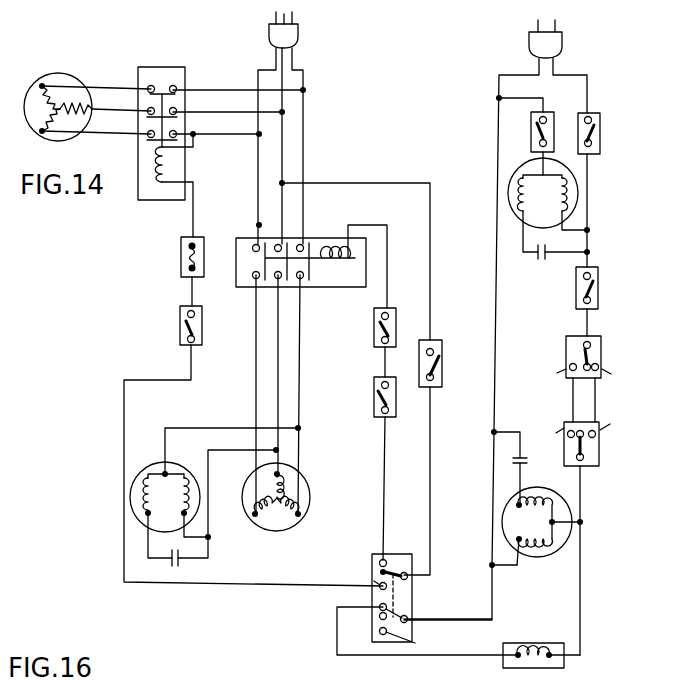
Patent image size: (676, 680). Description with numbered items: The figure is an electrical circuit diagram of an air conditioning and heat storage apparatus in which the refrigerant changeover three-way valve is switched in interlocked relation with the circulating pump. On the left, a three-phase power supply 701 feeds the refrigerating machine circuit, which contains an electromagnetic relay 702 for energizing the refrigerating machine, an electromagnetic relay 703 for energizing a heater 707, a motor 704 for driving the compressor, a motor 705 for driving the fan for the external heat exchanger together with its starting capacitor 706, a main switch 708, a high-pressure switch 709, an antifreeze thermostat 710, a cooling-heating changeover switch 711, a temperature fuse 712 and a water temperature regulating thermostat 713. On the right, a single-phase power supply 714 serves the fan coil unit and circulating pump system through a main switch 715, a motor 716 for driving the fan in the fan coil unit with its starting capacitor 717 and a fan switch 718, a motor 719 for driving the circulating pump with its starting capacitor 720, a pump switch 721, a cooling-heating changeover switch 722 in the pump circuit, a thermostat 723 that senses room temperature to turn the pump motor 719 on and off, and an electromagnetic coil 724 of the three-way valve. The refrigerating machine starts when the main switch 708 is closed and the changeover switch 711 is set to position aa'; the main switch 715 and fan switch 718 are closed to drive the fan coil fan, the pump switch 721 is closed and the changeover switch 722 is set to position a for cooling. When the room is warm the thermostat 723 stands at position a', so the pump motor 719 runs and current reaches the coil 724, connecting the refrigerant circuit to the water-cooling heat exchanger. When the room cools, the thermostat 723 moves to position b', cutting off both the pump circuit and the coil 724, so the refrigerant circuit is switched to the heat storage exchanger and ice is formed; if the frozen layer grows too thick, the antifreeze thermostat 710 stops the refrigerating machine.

The three-phase power supply 701 is at (297, 37).
The electromagnetic relay 702 is at (318, 287).
The electromagnetic relay 703 is at (178, 46).
The motor 704 is at (309, 493).
The motor 705 is at (157, 462).
The starting capacitor 706 is at (188, 569).
The heater 707 is at (38, 90).
The main switch 708 is at (436, 388).
The high-pressure switch 709 is at (381, 348).
The antifreeze thermostat 710 is at (378, 418).
The cooling-heating changeover switch 711 is at (420, 538).
The temperature fuse 712 is at (181, 246).
The water temperature regulating thermostat 713 is at (180, 316).
The single-phase power supply 714 is at (562, 43).
The main switch 715 is at (600, 142).
The motor 716 is at (508, 194).
The starting capacitor 717 is at (539, 260).
The switch 718 is at (553, 118).
The motor 719 is at (531, 557).
The starting capacitor 720 is at (528, 450).
The pump switch 721 is at (596, 275).
The cooling-heating changeover switch 722 is at (601, 351).
The thermostat 723 is at (599, 453).
The electromagnetic coil 724 is at (508, 650).